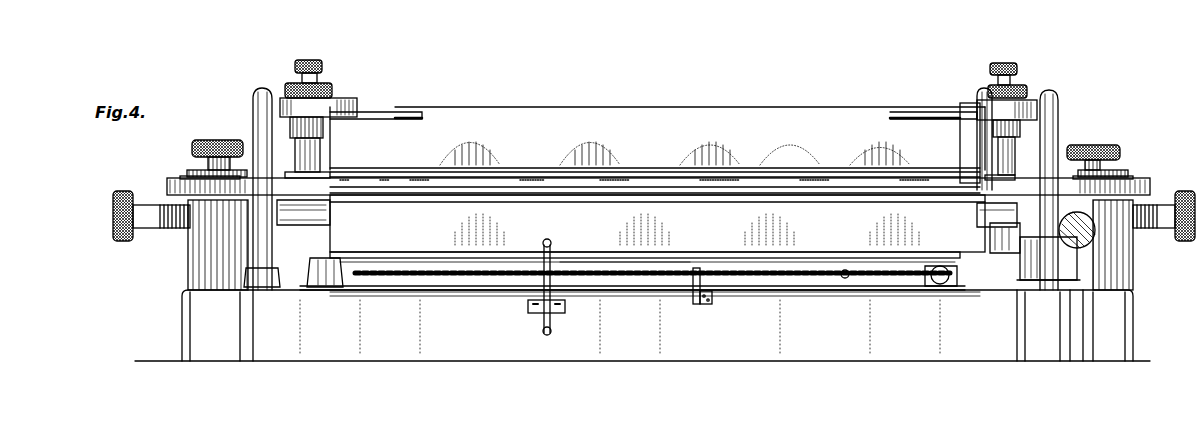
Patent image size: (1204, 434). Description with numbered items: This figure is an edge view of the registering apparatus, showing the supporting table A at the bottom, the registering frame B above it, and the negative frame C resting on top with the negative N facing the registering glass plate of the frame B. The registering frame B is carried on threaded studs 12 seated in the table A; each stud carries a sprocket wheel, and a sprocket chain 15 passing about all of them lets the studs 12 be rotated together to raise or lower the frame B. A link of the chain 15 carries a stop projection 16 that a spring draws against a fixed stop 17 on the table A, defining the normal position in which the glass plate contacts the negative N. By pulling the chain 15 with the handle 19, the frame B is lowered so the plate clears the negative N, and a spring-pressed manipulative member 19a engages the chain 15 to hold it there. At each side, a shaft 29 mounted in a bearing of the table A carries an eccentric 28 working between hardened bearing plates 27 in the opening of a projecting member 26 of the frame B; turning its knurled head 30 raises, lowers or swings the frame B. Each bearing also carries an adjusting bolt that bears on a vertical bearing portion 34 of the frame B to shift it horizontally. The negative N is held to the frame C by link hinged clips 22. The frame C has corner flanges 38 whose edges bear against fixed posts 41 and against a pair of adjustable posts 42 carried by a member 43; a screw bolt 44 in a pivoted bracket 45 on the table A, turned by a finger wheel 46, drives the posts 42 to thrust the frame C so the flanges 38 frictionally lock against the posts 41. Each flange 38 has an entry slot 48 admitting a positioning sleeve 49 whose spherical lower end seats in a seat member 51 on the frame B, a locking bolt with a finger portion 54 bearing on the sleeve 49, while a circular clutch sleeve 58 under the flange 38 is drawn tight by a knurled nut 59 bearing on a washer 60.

The supporting table A is at (188, 327).
The registering frame B is at (631, 223).
The negative frame C is at (504, 109).
The negative N is at (489, 177).
The threaded studs 12 is at (378, 252).
The sprocket chain 15 is at (620, 284).
The stop projection 16 is at (692, 273).
The fixed stop 17 is at (712, 301).
The handle 19 is at (845, 281).
The manipulative member 19a is at (545, 283).
The link hinged clips 22 is at (383, 177).
The projecting members 26 is at (170, 185).
The hardened bearing plates 27 is at (190, 177).
The eccentric 28 is at (195, 174).
The shaft 29 is at (190, 170).
The knurled head 30 is at (223, 140).
The vertical bearing portion 34 is at (330, 226).
The diagonally extending flange 38 is at (402, 112).
The posts 41 is at (253, 243).
The adjustable posts 42 is at (980, 146).
The member 43 is at (977, 215).
The screw bolt 44 is at (992, 231).
The bracket 45 is at (1078, 276).
The finger wheel 46 is at (1092, 238).
The entry slot 48 is at (276, 97).
The positioning sleeve 49 is at (317, 78).
The seat member 51 is at (320, 158).
The finger portion 54 is at (322, 66).
The circular clutch sleeve 58 is at (323, 130).
The knurled nut 59 is at (355, 103).
The washer 60 is at (340, 104).